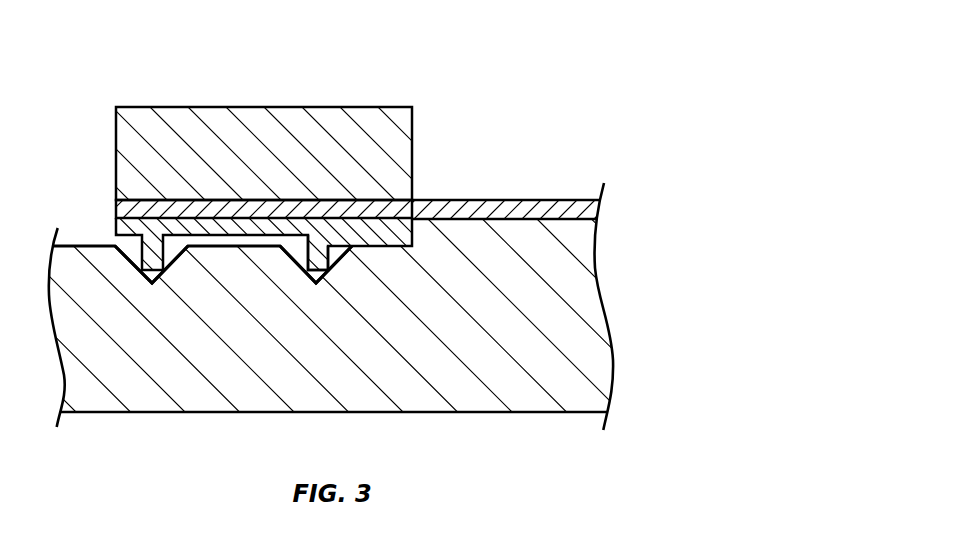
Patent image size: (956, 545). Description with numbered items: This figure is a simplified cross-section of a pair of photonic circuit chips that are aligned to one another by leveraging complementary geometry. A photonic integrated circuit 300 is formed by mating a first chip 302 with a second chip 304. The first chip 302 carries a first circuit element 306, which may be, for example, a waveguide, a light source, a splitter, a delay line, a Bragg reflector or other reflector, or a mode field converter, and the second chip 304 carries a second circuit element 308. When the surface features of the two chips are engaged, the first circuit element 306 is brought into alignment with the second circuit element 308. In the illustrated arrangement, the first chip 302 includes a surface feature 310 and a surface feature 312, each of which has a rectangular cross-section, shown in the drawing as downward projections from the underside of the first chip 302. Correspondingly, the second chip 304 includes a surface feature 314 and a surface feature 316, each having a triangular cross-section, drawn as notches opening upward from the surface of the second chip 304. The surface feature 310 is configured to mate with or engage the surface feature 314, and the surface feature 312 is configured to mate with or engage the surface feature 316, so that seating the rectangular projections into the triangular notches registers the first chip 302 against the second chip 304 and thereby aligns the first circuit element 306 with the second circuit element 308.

The photonic integrated circuit 300 is at (57, 46).
The first chip 302 is at (388, 94).
The second chip 304 is at (647, 315).
The first circuit element 306 is at (116, 205).
The second circuit element 308 is at (523, 200).
The surface feature 310 is at (143, 258).
The surface feature 312 is at (329, 254).
The surface feature 314 is at (153, 285).
The surface feature 316 is at (317, 285).